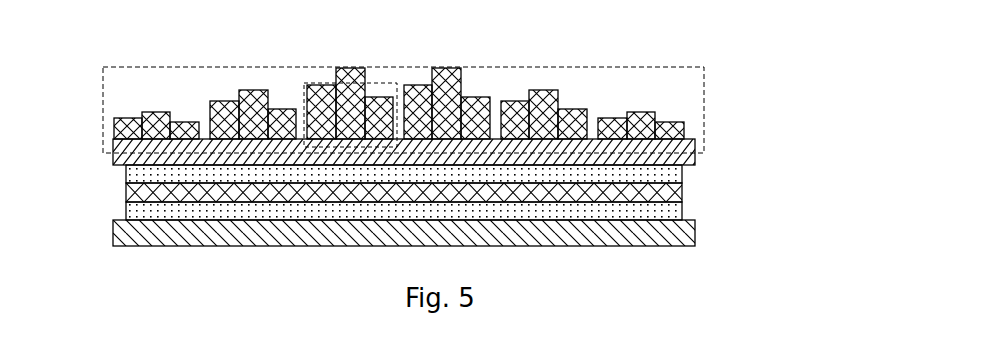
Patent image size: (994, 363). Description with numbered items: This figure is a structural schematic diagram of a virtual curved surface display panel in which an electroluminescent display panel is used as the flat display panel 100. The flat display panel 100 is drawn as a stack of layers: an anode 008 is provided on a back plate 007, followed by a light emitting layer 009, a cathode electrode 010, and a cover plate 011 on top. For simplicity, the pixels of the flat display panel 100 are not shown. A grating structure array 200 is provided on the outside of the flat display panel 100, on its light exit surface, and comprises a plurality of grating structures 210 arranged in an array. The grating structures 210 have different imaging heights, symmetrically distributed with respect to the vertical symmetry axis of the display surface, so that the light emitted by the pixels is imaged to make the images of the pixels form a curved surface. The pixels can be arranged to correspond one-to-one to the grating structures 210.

The grating structure array 200 is at (368, 91).
The grating structure 210 is at (362, 87).
The flat display panel 100 is at (482, 192).
The cover plate 011 is at (695, 158).
The cathode electrode 010 is at (682, 175).
The light emitting layer 009 is at (682, 192).
The anode 008 is at (682, 210).
The back plate 007 is at (695, 233).